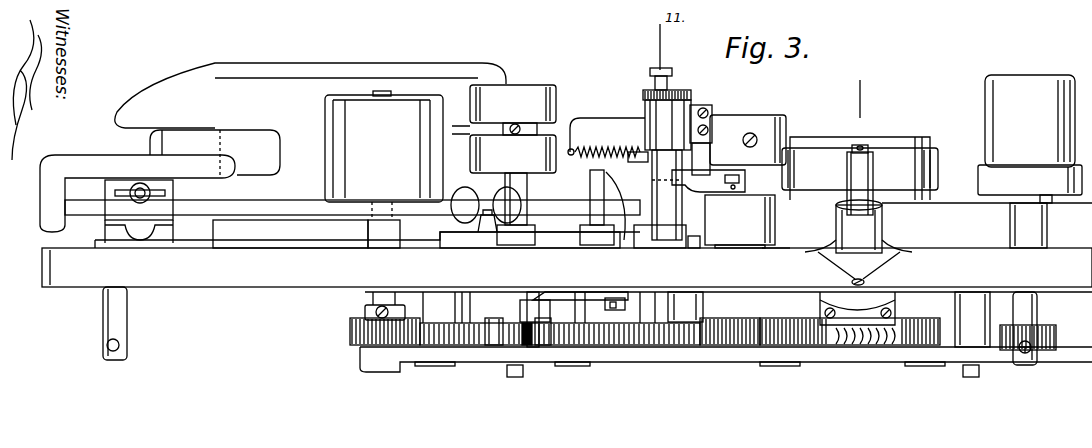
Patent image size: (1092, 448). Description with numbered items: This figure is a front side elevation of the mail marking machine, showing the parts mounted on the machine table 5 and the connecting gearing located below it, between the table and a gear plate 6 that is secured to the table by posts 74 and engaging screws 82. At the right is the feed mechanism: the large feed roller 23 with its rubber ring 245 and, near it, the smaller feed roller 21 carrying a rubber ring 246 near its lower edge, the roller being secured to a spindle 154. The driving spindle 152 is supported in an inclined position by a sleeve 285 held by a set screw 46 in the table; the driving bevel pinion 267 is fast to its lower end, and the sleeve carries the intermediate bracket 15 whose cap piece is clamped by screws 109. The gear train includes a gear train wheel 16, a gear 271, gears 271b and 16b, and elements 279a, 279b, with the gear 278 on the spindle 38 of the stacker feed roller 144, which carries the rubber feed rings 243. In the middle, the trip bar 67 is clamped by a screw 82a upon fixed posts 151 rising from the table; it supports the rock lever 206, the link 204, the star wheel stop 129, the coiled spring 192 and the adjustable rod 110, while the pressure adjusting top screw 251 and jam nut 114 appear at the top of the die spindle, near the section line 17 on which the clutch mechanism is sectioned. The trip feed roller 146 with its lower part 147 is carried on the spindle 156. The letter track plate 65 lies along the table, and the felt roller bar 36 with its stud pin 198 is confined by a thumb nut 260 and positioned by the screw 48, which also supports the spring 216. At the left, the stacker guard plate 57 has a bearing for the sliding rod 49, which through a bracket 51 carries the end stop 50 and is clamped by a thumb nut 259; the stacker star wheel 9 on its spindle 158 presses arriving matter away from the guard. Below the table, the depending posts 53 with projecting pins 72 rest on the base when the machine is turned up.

The machine table 5 is at (567, 267).
The gear plate 6 is at (758, 376).
The stacker star wheel 9 is at (384, 169).
The intermediate bracket 15 is at (868, 299).
The gear train wheel 16 is at (910, 346).
The gear train wheel 16b is at (694, 345).
The section line 17 is at (957, 205).
The small feed roller 21 is at (1030, 121).
The large feed roller 23 is at (893, 133).
The felt roller bar 36 is at (566, 240).
The spindle 38 is at (528, 186).
The set screw 46 is at (868, 280).
The screw 48 is at (624, 302).
The sliding rod 49 is at (275, 206).
The end stop 50 is at (157, 175).
The bracket 51 is at (137, 199).
The depending posts 53 is at (125, 315).
The stacker guard plate 57 is at (310, 95).
The letter track plate 65 is at (764, 252).
The trip bar 67 is at (646, 112).
The projecting pins 72 is at (120, 346).
The posts 74 is at (528, 320).
The screws 82 is at (523, 372).
The screw 82a is at (700, 108).
The screws 109 is at (825, 312).
The adjustable rod 110 is at (617, 120).
The jam nut 114 is at (690, 94).
The star wheel stop 129 is at (628, 158).
The stacker feed roller 144 is at (520, 88).
The trip feed roller 146 is at (752, 117).
The lower part of trip feed roller 147 is at (740, 221).
The fixed posts 151 is at (652, 195).
The driving spindle 152 is at (873, 177).
The spindle 154 is at (1052, 203).
The spindle 156 is at (747, 298).
The spindle 158 is at (374, 298).
The coiled spring 192 is at (600, 142).
The stud pin 198 is at (590, 215).
The link 204 is at (700, 186).
The rock lever 206 is at (706, 156).
The spring 216 is at (600, 292).
The rubber feed rings 243 is at (513, 129).
The rubber ring 245 is at (860, 169).
The rubber ring 246 is at (1030, 180).
The pressure adjusting top screw 251 is at (672, 78).
The thumb nut 259 is at (156, 190).
The thumb nut 260 is at (470, 200).
The driving bevel pinion 267 is at (858, 346).
The gear 271 is at (772, 322).
The gear 271b is at (352, 330).
The gear 278 is at (500, 318).
The gear train element 279a is at (614, 340).
The gear train element 279b is at (457, 345).
The sleeve 285 is at (882, 229).